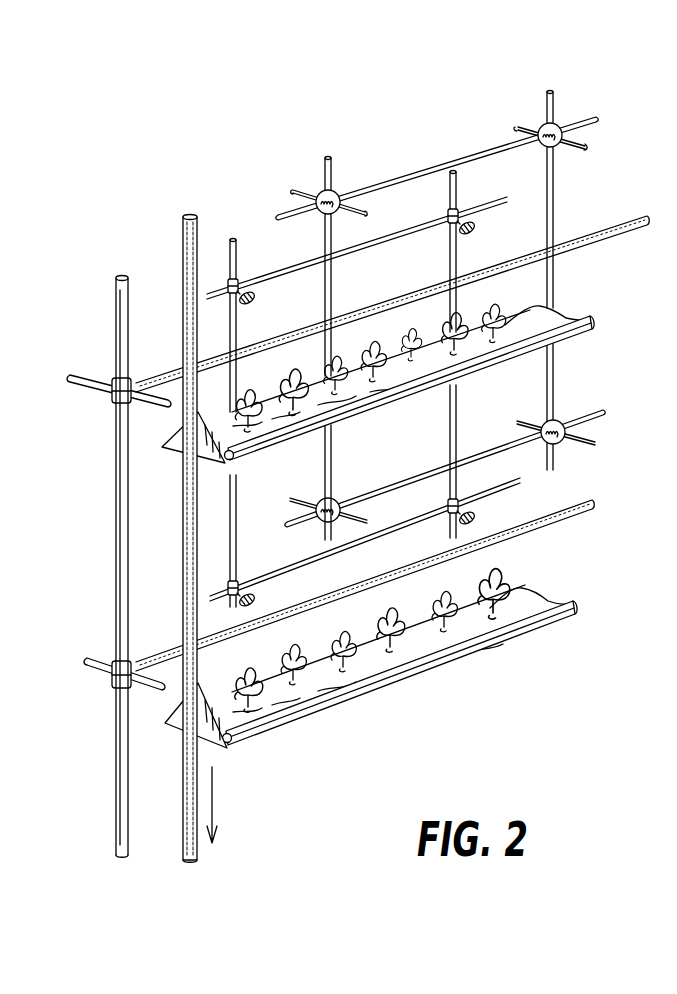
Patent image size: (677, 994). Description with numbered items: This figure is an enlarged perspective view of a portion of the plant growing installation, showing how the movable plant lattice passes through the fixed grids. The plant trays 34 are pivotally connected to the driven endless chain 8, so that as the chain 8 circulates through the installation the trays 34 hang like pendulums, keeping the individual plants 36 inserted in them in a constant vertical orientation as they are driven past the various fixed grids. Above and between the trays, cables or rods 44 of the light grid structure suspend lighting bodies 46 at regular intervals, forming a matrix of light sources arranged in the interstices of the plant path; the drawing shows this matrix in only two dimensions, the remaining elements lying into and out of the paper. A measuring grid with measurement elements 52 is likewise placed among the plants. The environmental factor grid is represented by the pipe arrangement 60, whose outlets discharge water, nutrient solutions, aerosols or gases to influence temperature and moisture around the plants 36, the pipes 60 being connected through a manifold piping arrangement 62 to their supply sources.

The endless chain 8 is at (183, 497).
The plant container 34 is at (376, 408).
The plant 36 is at (497, 303).
The cable or rod 44 is at (442, 165).
The lighting body 46 is at (338, 191).
The measurement element 52 is at (253, 592).
The pipe 60 is at (372, 577).
The manifold piping arrangement 62 is at (120, 805).